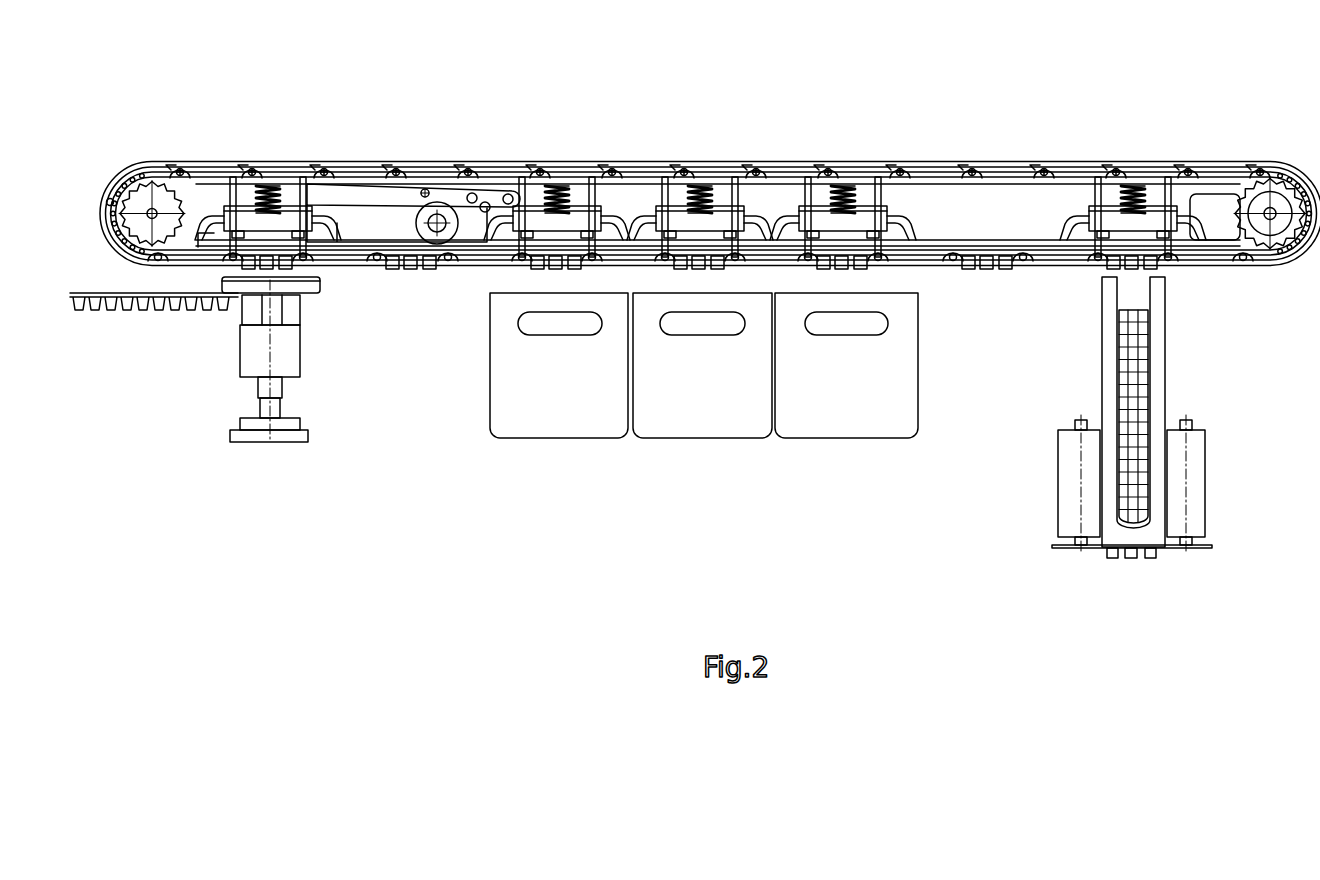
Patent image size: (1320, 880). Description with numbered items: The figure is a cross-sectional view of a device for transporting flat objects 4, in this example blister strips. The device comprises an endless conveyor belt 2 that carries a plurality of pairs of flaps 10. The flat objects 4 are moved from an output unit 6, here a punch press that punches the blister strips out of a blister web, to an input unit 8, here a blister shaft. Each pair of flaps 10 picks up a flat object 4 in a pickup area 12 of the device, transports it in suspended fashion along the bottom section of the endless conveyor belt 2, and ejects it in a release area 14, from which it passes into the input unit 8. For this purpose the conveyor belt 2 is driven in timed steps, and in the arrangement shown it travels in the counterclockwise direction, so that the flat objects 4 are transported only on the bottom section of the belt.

The endless conveyor belt 2 is at (645, 170).
The flat object 4 is at (985, 268).
The output unit 6 is at (255, 352).
The input unit 8 is at (1157, 402).
The pairs of flaps 10 is at (443, 267).
The pickup area 12 is at (255, 233).
The release area 14 is at (1133, 232).